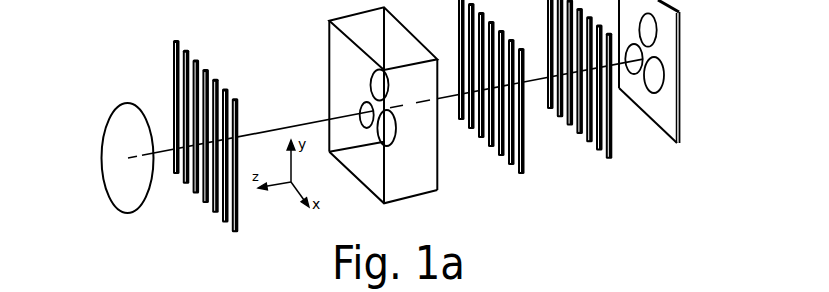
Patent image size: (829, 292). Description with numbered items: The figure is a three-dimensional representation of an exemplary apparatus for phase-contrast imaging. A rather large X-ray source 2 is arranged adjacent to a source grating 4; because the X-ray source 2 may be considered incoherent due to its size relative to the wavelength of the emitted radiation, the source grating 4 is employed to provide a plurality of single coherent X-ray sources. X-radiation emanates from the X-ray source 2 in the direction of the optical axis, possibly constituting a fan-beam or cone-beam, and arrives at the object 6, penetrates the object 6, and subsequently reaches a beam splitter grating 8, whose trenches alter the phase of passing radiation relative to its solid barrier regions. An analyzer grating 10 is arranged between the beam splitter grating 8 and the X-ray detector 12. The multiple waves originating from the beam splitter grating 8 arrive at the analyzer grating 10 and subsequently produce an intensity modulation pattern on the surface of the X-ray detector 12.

The X-ray source 2 is at (117, 173).
The source grating 4 is at (204, 199).
The object 6 is at (397, 185).
The beam splitter grating 8 is at (500, 160).
The analyzer grating 10 is at (583, 143).
The X-ray detector 12 is at (655, 128).